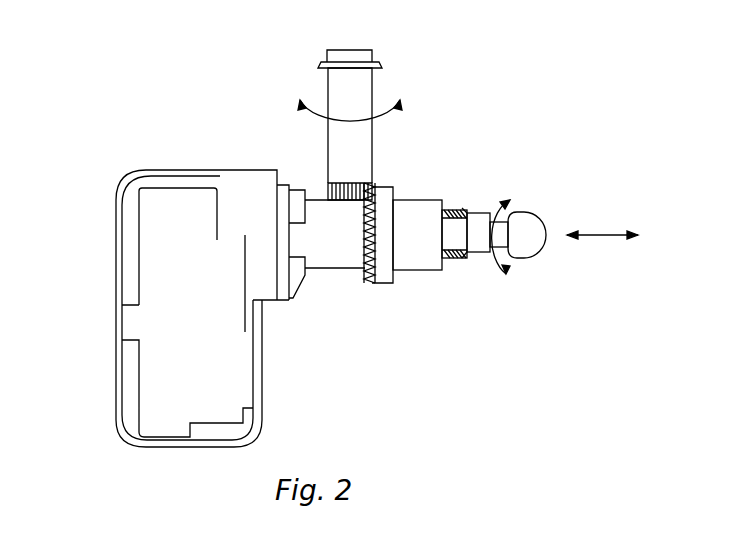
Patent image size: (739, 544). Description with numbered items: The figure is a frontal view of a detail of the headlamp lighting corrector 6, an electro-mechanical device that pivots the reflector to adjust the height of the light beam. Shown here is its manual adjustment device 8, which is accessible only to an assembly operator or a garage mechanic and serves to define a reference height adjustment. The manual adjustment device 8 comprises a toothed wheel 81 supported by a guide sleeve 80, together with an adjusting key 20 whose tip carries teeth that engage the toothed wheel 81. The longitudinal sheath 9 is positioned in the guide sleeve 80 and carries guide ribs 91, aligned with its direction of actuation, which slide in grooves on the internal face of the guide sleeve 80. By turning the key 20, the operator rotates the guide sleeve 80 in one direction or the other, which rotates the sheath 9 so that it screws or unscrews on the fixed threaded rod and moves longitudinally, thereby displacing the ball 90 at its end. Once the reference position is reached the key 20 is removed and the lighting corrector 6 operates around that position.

The lighting corrector 6 is at (100, 170).
The manual adjustment device 8 is at (418, 188).
The adjusting key 20 is at (330, 80).
The guide sleeve 80 is at (413, 262).
The toothed wheel 81 is at (360, 282).
The guide ribs 91 is at (455, 262).
The longitudinal sheath 9 is at (492, 223).
The ball 90 is at (527, 226).